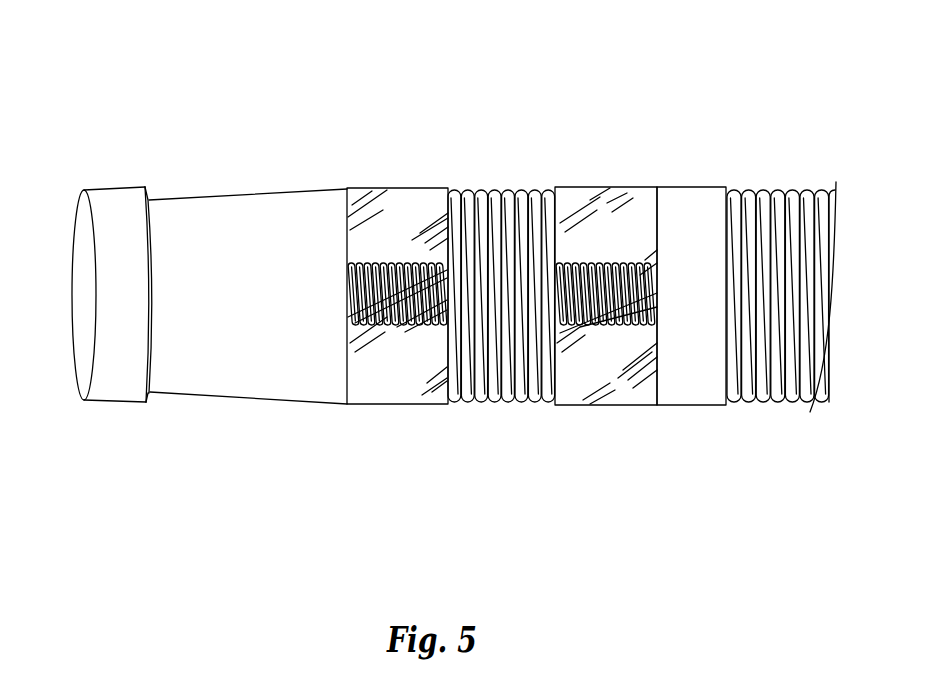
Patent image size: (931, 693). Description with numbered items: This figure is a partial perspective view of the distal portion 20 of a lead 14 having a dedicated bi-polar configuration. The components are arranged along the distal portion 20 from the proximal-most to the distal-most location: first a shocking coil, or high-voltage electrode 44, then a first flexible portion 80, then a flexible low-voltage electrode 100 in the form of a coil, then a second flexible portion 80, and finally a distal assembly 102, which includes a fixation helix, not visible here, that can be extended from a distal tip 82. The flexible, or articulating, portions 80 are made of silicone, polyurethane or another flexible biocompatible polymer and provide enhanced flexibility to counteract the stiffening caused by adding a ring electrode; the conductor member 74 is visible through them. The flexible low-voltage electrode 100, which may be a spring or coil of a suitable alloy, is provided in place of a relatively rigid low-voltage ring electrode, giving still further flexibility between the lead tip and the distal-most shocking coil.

The distal portion 20 is at (705, 70).
The lead 14 is at (600, 540).
The distal tip 82 is at (64, 397).
The distal assembly 102 is at (298, 415).
The flexible low-voltage electrode 100 is at (483, 195).
The flexible portions 80 is at (592, 348).
The conductor member 74 is at (608, 343).
The high-voltage electrode 44 is at (692, 397).